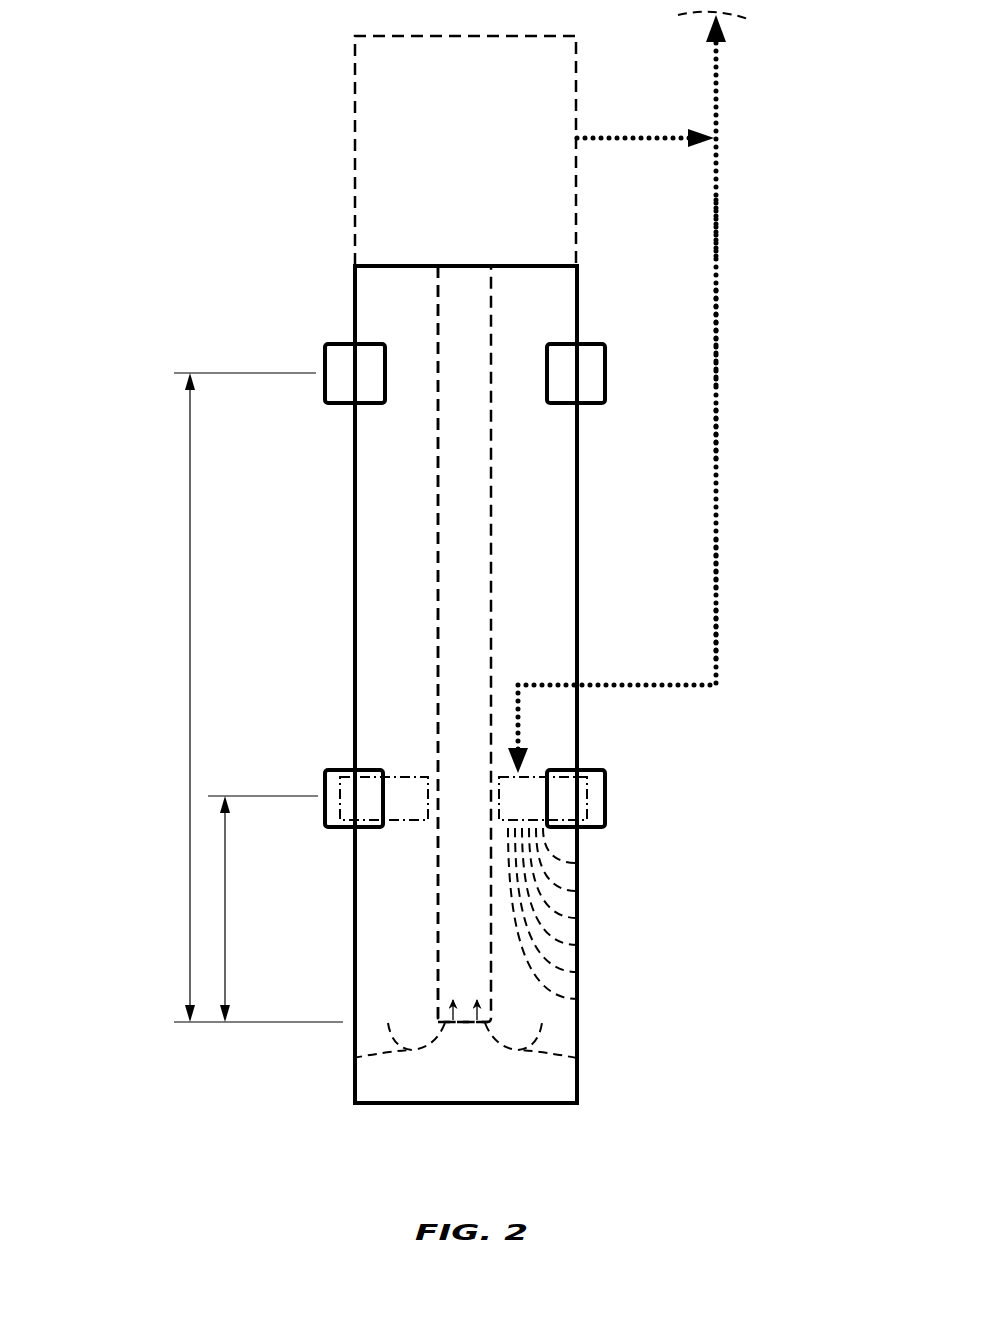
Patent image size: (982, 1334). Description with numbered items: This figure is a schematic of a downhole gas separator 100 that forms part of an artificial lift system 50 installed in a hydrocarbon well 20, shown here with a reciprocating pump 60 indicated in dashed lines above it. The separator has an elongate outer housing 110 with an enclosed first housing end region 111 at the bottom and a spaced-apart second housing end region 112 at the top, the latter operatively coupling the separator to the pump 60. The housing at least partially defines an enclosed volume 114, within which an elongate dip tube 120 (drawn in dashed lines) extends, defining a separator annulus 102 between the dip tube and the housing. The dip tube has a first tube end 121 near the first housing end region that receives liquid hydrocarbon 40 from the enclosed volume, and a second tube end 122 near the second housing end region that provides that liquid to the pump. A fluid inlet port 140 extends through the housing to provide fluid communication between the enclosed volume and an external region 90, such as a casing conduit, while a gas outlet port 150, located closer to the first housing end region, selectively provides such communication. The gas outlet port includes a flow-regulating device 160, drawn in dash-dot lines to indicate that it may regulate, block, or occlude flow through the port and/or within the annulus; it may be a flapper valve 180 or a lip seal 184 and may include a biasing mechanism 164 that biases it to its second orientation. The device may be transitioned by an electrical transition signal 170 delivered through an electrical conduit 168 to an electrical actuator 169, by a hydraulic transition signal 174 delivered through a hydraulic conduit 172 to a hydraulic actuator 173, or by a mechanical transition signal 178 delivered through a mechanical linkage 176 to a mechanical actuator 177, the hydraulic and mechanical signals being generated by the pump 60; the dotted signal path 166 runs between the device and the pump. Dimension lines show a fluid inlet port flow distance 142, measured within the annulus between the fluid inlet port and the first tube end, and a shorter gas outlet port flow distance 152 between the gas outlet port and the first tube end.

The hydrocarbon well 20 is at (100, 142).
The artificial lift system 50 is at (100, 202).
The downhole gas separator 100 is at (133, 320).
The reciprocating pump 60 is at (343, 122).
The elongate outer housing 110 is at (348, 585).
The separator annulus 102 is at (353, 505).
The second housing end region 112 is at (354, 252).
The first housing end region 111 is at (385, 1105).
The elongate dip tube 120 is at (433, 725).
The enclosed volume 114 is at (390, 668).
The first tube end 121 is at (463, 1025).
The second tube end 122 is at (472, 265).
The fluid inlet port 140 is at (325, 356).
The gas outlet port 150 is at (325, 806).
The flow-regulating device 160 is at (392, 768).
The biasing mechanism 164 is at (398, 808).
The electrical actuator 169 is at (580, 890).
The hydraulic actuator 173 is at (580, 917).
The mechanical actuator 177 is at (580, 944).
The flapper valve 180 is at (580, 971).
The lip seal 184 is at (580, 998).
The liquid hydrocarbon 40 is at (352, 1060).
The flow path 166 is at (755, 505).
The electrical conduit 168 is at (722, 643).
The electrical transition signal 170 is at (720, 567).
The hydraulic conduit 172 is at (722, 443).
The hydraulic transition signal 174 is at (720, 367).
The mechanical linkage 176 is at (722, 320).
The mechanical transition signal 178 is at (720, 242).
The fluid inlet port flow distance 142 is at (188, 555).
The gas outlet port flow distance 152 is at (226, 910).
The external region 90 is at (140, 686).